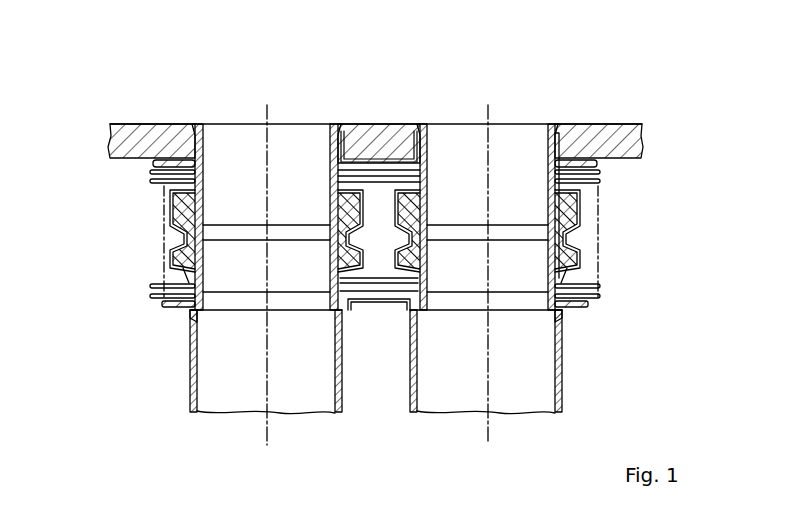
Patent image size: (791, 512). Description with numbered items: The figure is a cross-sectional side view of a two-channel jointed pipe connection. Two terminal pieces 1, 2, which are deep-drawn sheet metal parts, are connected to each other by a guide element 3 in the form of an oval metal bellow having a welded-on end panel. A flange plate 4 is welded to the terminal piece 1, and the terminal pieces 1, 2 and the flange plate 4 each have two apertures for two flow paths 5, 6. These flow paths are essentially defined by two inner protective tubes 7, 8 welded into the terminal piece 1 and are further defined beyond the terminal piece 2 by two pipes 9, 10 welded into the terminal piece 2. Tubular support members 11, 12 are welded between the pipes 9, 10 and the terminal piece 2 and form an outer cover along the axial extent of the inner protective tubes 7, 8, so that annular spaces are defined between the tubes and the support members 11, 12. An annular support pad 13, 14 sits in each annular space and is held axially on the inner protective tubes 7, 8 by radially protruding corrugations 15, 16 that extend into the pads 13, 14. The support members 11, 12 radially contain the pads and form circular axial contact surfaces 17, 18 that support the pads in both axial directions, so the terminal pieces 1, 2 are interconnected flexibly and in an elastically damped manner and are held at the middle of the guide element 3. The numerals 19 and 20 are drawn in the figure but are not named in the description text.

The terminal piece 1 is at (157, 168).
The terminal piece 2 is at (170, 300).
The guide element 3 is at (152, 177).
The flange plate 4 is at (375, 125).
The flow path 5 is at (243, 118).
The flow path 6 is at (477, 118).
The inner protective tube 7 is at (195, 157).
The inner protective tube 8 is at (613, 150).
The pipe 9 is at (190, 396).
The pipe 10 is at (563, 357).
The tubular support member 11 is at (199, 315).
The tubular support member 12 is at (563, 295).
The annular support pad 13 is at (178, 262).
The annular support pad 14 is at (583, 243).
The radially protruding corrugation 15 is at (185, 237).
The radially protruding corrugation 16 is at (583, 232).
The circular axial contact surface 17 is at (178, 192).
The circular axial contact surface 18 is at (593, 187).
The support member 19 is at (165, 276).
The support member 20 is at (576, 262).